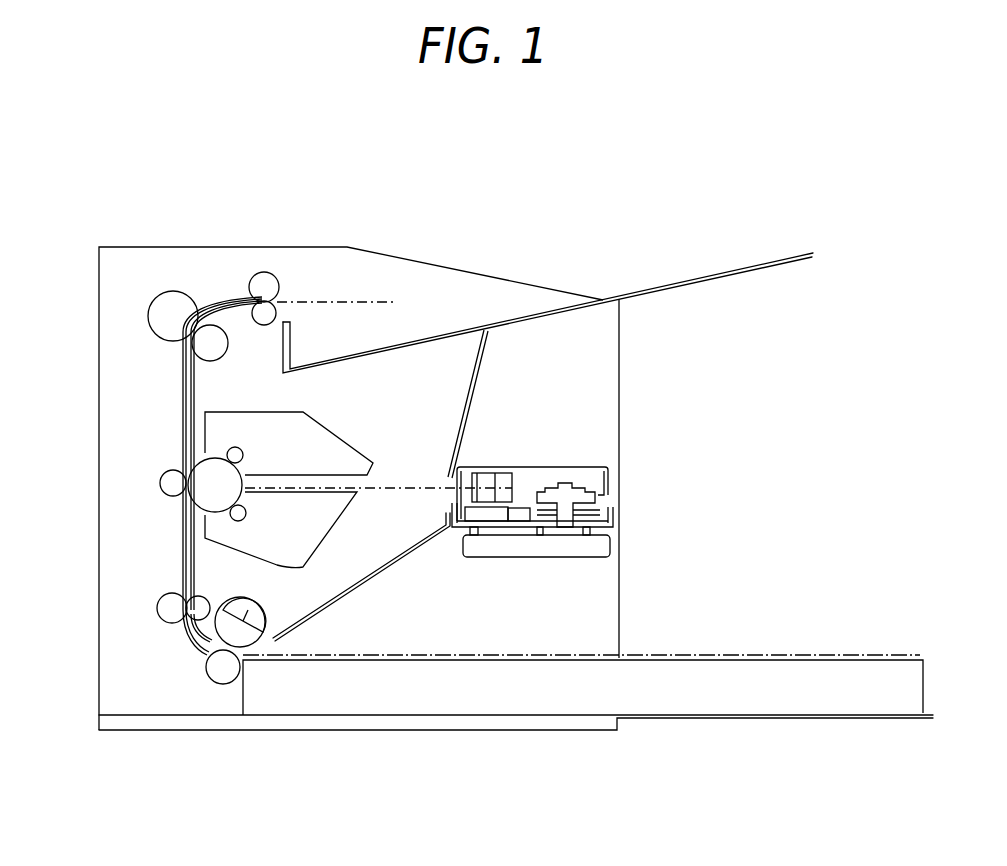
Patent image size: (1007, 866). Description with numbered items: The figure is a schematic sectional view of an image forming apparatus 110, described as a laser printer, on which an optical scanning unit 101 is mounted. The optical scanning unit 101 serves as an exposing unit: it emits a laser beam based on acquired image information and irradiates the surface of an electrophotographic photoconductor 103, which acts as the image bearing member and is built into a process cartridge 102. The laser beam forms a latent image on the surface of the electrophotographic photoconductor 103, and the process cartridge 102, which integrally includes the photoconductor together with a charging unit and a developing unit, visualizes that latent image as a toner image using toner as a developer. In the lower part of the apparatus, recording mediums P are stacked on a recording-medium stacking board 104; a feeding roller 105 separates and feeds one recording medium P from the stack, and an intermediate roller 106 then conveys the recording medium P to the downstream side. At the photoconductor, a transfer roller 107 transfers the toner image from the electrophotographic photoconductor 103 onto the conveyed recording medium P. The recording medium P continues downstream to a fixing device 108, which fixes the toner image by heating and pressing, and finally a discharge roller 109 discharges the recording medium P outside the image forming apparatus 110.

The optical scanning unit 101 is at (585, 477).
The process cartridge 102 is at (323, 422).
The electrophotographic photoconductor 103 is at (215, 465).
The recording-medium stacking board 104 is at (655, 722).
The feeding roller 105 is at (260, 596).
The intermediate roller 106 is at (173, 606).
The transfer roller 107 is at (173, 481).
The fixing device 108 is at (173, 305).
The discharge roller 109 is at (263, 285).
The image forming apparatus 110 is at (120, 263).
The recording medium P is at (727, 653).